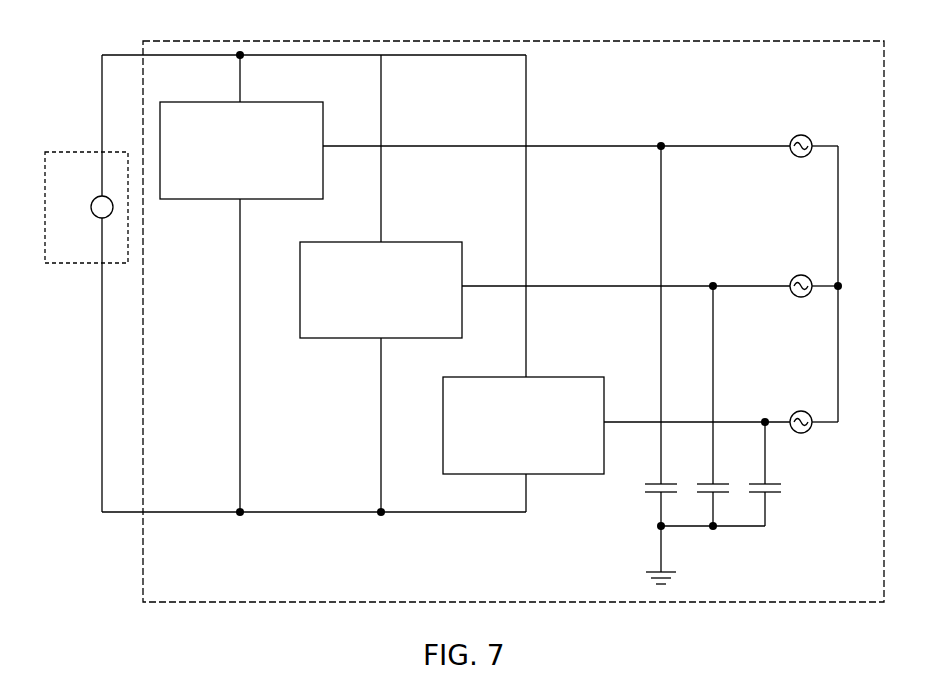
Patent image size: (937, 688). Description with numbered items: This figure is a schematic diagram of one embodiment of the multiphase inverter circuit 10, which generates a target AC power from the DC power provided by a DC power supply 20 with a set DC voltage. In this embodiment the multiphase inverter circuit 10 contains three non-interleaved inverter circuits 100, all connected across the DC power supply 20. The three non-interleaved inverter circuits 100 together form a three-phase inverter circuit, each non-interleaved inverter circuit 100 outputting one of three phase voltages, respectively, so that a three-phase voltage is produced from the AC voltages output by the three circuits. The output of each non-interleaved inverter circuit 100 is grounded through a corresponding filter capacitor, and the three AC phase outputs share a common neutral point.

The multiphase inverter circuit 10 is at (672, 41).
The DC power supply 20 is at (72, 152).
The non-interleaved inverter circuit 100 is at (323, 102).